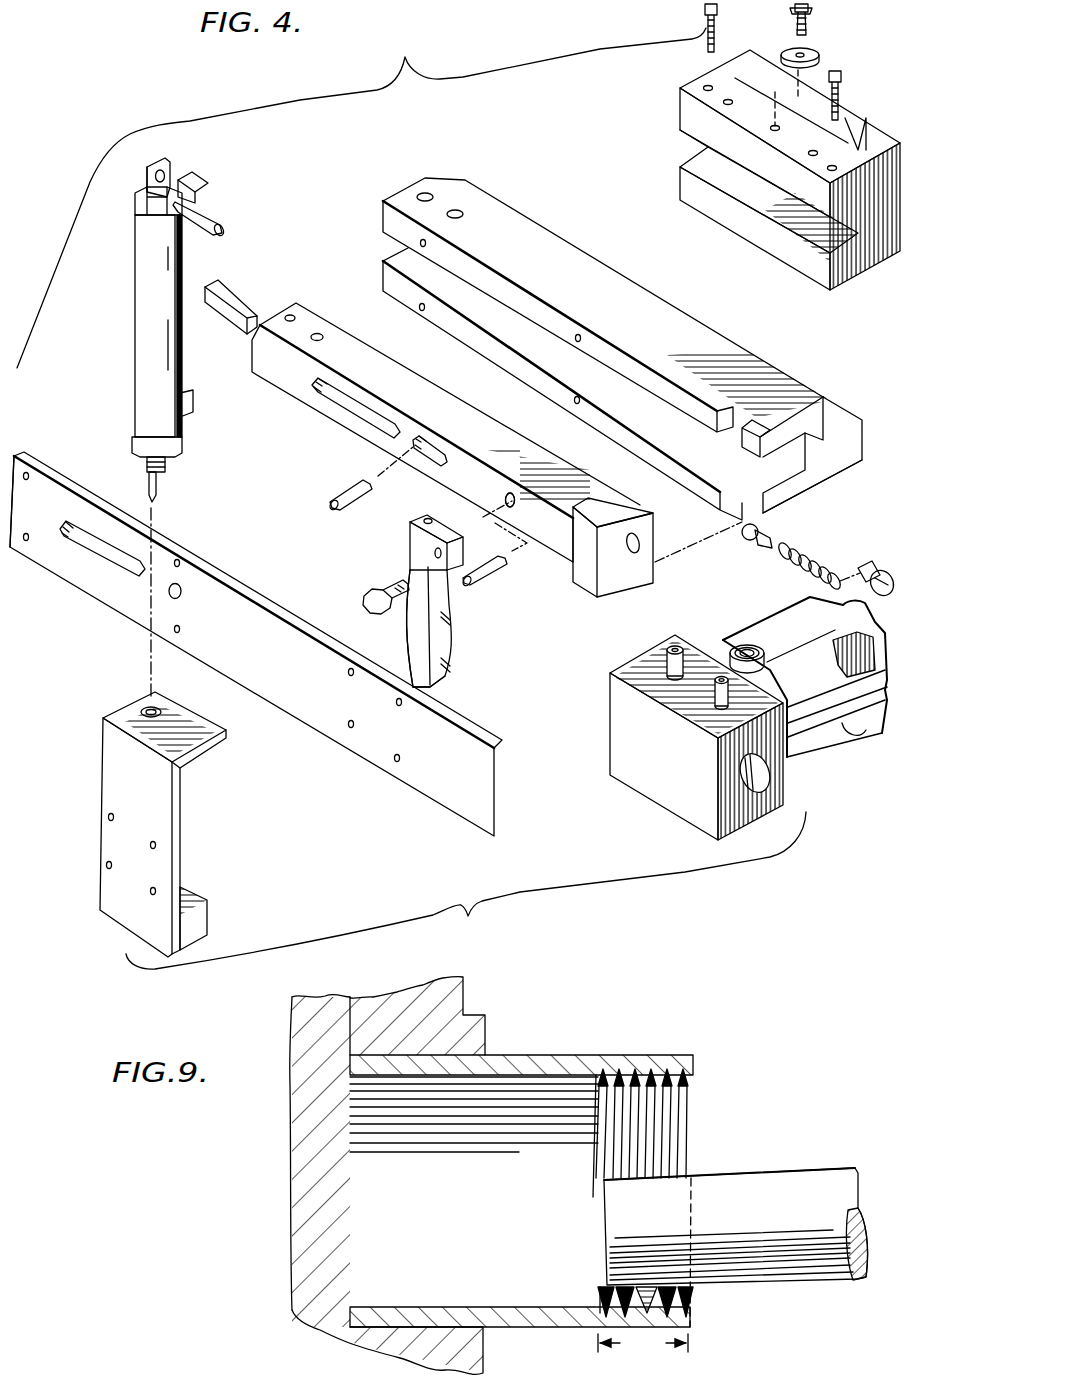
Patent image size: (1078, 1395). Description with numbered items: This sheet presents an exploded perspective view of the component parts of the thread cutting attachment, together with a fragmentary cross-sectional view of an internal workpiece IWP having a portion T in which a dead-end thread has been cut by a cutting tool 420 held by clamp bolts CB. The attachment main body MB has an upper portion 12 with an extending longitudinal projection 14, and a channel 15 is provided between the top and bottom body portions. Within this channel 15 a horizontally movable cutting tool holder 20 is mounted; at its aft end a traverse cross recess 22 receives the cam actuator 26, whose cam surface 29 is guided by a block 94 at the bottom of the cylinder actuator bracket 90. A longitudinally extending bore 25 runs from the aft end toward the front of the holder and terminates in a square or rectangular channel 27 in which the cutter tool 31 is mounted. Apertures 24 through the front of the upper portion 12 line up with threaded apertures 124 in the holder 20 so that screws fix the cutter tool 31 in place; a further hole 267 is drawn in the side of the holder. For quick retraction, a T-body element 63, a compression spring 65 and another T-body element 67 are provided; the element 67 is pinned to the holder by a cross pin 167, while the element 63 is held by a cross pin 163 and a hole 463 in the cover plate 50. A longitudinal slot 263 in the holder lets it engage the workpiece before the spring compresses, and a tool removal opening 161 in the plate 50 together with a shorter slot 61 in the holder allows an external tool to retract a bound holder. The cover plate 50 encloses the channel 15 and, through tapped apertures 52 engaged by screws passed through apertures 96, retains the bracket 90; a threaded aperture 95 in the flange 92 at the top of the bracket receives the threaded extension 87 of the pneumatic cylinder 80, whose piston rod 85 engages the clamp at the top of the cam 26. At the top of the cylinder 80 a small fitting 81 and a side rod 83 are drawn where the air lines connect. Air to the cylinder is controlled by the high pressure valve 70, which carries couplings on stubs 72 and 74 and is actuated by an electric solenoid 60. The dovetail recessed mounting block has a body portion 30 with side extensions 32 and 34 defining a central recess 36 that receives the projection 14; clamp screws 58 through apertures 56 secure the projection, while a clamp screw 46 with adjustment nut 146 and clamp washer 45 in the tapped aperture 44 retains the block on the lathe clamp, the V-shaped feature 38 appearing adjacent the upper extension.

In FIG. 4, the upper portion 12 is at (573, 285).
In FIG. 4, the longitudinal projection 14 is at (848, 443).
In FIG. 4, the channel 15 is at (549, 353).
In FIG. 4, the cutting tool holder 20 is at (426, 407).
In FIG. 4, the traverse cross recess 22 is at (588, 566).
In FIG. 4, the apertures 24 is at (460, 212).
In FIG. 4, the longitudinally extending bore 25 is at (638, 553).
In FIG. 4, the cam actuator 26 is at (416, 598).
In FIG. 4, the square or rectangular channel 27 is at (410, 655).
In FIG. 4, the cam surface 29 is at (445, 671).
In FIG. 4, the body portion 30 is at (884, 218).
In FIG. 4, the cutter tool 31 is at (244, 300).
In FIG. 4, the side extension 32 is at (773, 232).
In FIG. 4, the side extension 34 is at (693, 107).
In FIG. 4, the central recess 36 is at (767, 171).
In FIG. 4, the V notch 38 is at (850, 116).
In FIG. 4, the tapped aperture 44 is at (705, 152).
In FIG. 4, the clamp washer 45 is at (820, 51).
In FIG. 4, the clamp screw 46 is at (793, 30).
In FIG. 4, the adjustment nut 146 is at (812, 12).
In FIG. 4, the cover plate 50 is at (242, 638).
In FIG. 4, the tapped apertures 52 is at (347, 723).
In FIG. 4, the apertures 56 is at (706, 85).
In FIG. 4, the clamp screws 58 is at (703, 10).
In FIG. 4, the electric solenoid 60 is at (829, 682).
In FIG. 4, the slot 61 is at (347, 405).
In FIG. 4, the T-body element 63 is at (748, 540).
In FIG. 4, the compression spring 65 is at (813, 560).
In FIG. 4, the T-body element 67 is at (888, 575).
In FIG. 4, the high pressure valve 70 is at (672, 778).
In FIG. 4, the stub 72 is at (718, 683).
In FIG. 4, the stub 74 is at (668, 655).
In FIG. 4, the pneumatic cylinder 80 is at (171, 310).
In FIG. 4, the cylinder bracket 81 is at (201, 203).
In FIG. 4, the rod 83 is at (221, 223).
In FIG. 4, the piston rod 85 is at (157, 485).
In FIG. 4, the threaded extension 87 is at (166, 465).
In FIG. 4, the cylinder actuator bracket 90 is at (152, 788).
In FIG. 4, the flange 92 is at (200, 727).
In FIG. 4, the block 94 is at (198, 920).
In FIG. 4, the threaded aperture 95 is at (144, 708).
In FIG. 4, the apertures 96 is at (106, 863).
In FIG. 4, the threaded apertures 124 is at (337, 303).
In FIG. 4, the tool removal opening 161 is at (116, 562).
In FIG. 4, the cross pin 163 is at (347, 490).
In FIG. 4, the cross pin 167 is at (487, 568).
In FIG. 4, the longitudinal slot 263 is at (443, 468).
In FIG. 4, the hole 267 is at (510, 493).
In FIG. 4, the hole 463 is at (184, 588).
In FIG. 4, the clamp bolts CB is at (378, 590).
In FIG. 4, the main body MB is at (833, 497).
In FIG. 9, the internal workpiece IWP is at (617, 1064).
In FIG. 9, the cutting tool 420 is at (800, 1210).
In FIG. 9, the portion T is at (643, 1344).